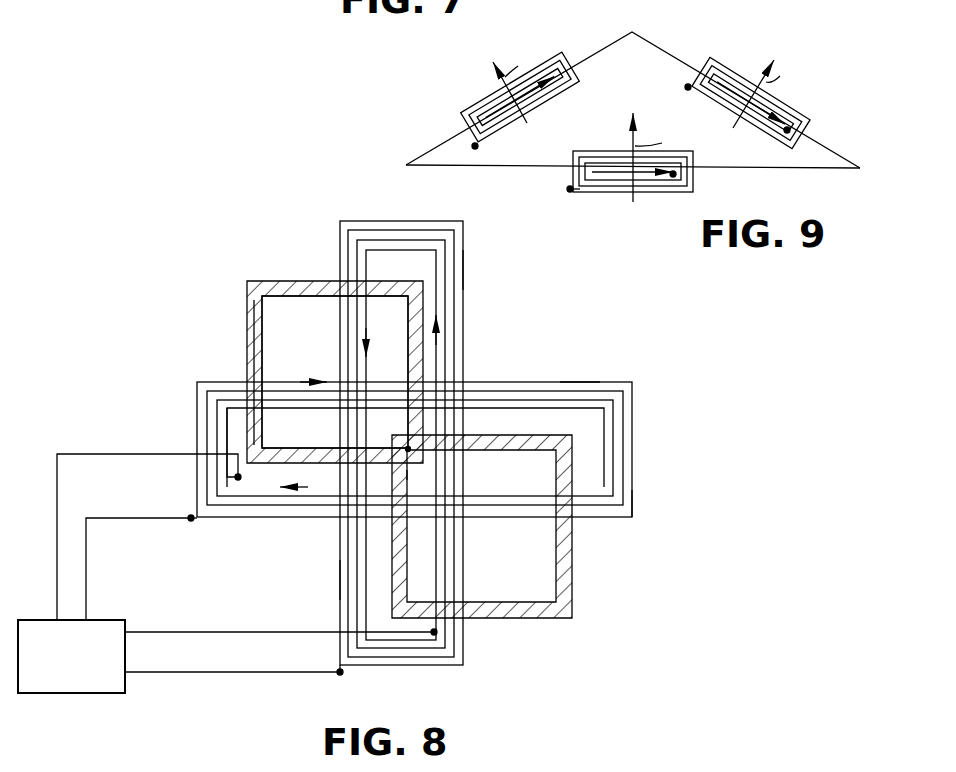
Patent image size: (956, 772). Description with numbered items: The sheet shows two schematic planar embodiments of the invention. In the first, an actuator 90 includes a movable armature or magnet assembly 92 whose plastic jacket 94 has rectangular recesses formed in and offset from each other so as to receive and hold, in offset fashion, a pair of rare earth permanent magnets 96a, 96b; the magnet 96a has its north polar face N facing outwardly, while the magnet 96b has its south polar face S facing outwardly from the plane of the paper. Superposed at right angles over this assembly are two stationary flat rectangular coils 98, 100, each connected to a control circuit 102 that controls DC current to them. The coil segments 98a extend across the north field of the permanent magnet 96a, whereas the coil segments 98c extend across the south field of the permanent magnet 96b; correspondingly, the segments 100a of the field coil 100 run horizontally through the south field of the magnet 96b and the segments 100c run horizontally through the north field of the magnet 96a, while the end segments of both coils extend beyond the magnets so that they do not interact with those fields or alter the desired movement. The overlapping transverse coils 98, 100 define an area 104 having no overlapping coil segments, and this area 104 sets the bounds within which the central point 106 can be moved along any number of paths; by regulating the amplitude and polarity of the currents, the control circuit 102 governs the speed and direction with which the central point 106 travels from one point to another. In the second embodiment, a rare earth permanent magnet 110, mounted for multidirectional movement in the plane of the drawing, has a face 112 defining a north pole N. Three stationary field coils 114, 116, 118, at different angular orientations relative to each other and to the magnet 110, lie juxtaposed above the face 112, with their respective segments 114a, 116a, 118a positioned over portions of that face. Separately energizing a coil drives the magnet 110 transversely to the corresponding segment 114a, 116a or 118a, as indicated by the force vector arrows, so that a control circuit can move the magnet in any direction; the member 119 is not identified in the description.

In FIG. 8, the actuator 90 is at (242, 317).
In FIG. 8, the magnet assembly 92 is at (325, 262).
In FIG. 8, the plastic jacket 94 is at (255, 357).
In FIG. 8, the permanent magnet 96a is at (323, 325).
In FIG. 8, the permanent magnet 96b is at (522, 555).
In FIG. 8, the field coil 98 is at (370, 218).
In FIG. 8, the coil segments 98a is at (360, 581).
In FIG. 8, the coil segments 98c is at (457, 278).
In FIG. 8, the field coil 100 is at (628, 423).
In FIG. 8, the coil segments 100a is at (631, 505).
In FIG. 8, the coil segments 100c is at (571, 400).
In FIG. 8, the control circuit 102 is at (116, 619).
In FIG. 8, the area 104 is at (413, 475).
In FIG. 8, the central point 106 is at (408, 449).
In FIG. 9, the permanent magnet 110 is at (636, 68).
In FIG. 9, the magnet face 112 is at (597, 123).
In FIG. 9, the field coil 114 is at (467, 110).
In FIG. 9, the coil segment 114a is at (495, 133).
In FIG. 9, the field coil 116 is at (718, 60).
In FIG. 9, the coil segment 116a is at (780, 133).
In FIG. 9, the field coil 118 is at (670, 191).
In FIG. 9, the coil segment 118a is at (637, 146).
In FIG. 9, the base edge 119 is at (758, 170).